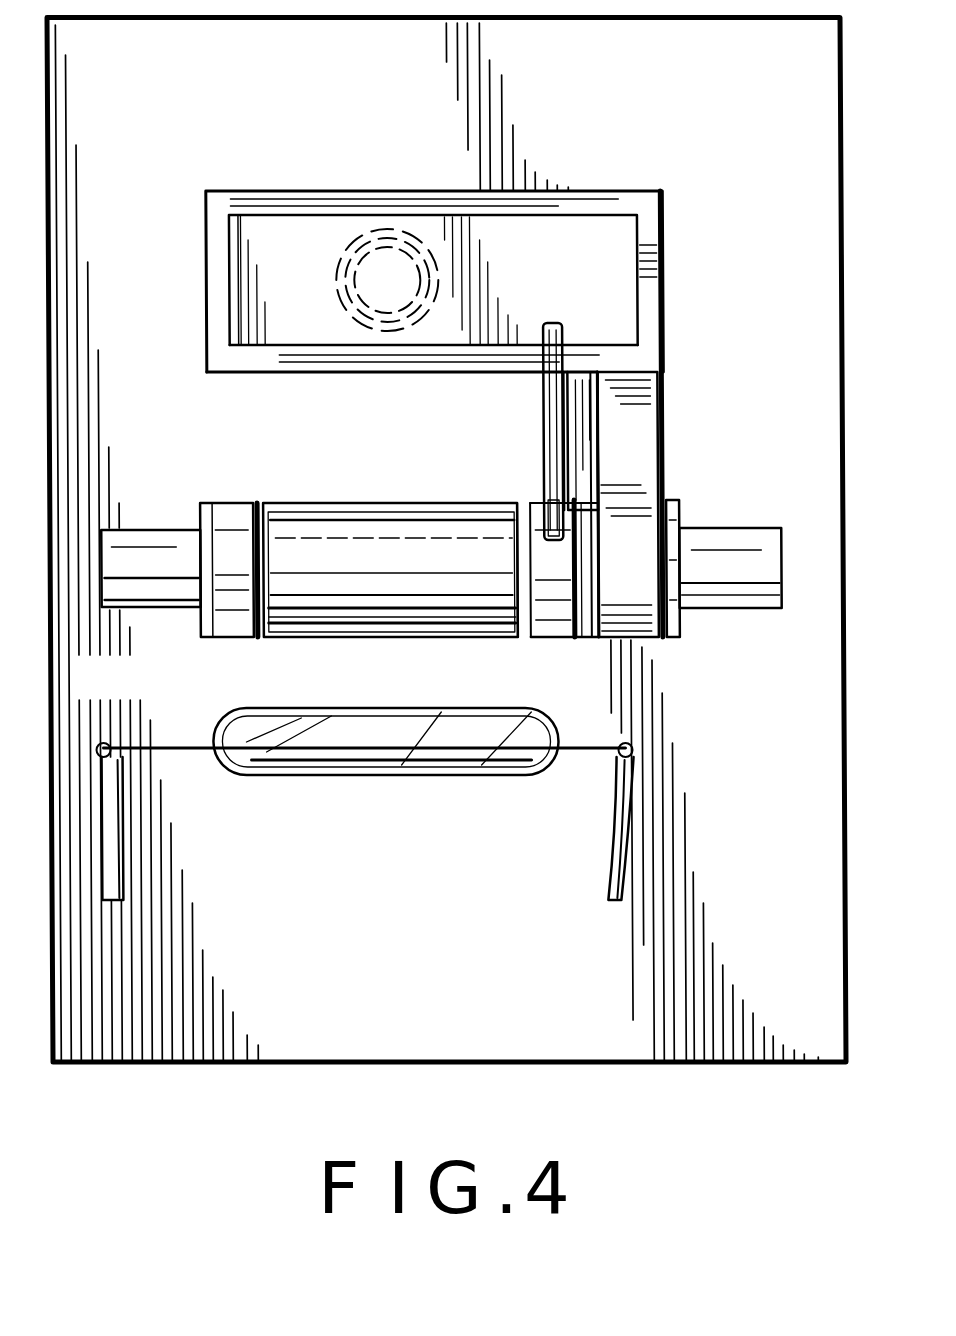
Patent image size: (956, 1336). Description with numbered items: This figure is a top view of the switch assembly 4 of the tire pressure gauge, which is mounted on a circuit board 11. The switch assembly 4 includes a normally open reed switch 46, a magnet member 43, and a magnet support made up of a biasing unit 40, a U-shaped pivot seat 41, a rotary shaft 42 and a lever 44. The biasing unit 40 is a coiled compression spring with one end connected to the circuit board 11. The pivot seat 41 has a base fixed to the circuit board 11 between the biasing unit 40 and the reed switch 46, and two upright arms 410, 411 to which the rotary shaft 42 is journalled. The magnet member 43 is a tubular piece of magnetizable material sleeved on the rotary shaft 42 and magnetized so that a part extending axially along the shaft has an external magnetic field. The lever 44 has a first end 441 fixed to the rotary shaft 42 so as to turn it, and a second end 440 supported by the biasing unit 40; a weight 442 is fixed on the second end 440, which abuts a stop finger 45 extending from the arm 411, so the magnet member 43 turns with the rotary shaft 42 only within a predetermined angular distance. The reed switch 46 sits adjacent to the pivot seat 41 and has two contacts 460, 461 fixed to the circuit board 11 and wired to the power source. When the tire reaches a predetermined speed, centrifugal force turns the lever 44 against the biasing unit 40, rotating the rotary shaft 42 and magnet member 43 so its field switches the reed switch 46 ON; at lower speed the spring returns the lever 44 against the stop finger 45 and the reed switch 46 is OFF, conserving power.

The switch assembly 4 is at (805, 423).
The circuit board 11 is at (807, 824).
The biasing unit 40 is at (394, 242).
The U-shaped pivot seat 41 is at (524, 641).
The upright arm 410 is at (215, 522).
The upright arm 411 is at (579, 506).
The rotary shaft 42 is at (728, 583).
The magnet member 43 is at (412, 513).
The lever 44 is at (554, 381).
The second end 440 is at (654, 284).
The first end 441 is at (682, 504).
The weight 442 is at (605, 245).
The stop finger 45 is at (546, 416).
The reed switch 46 is at (285, 776).
The contact 460 is at (154, 750).
The contact 461 is at (578, 753).